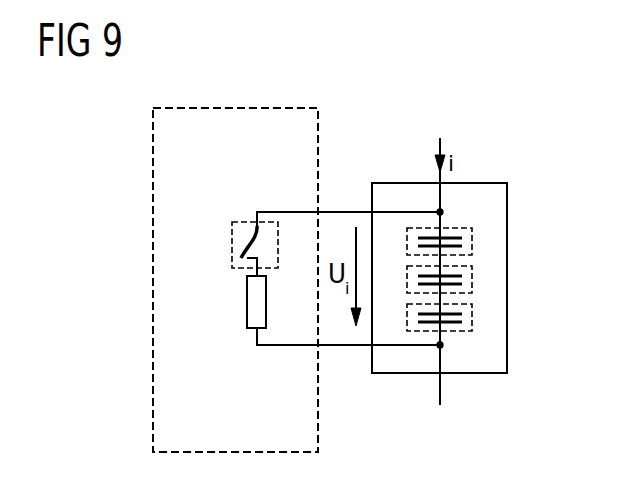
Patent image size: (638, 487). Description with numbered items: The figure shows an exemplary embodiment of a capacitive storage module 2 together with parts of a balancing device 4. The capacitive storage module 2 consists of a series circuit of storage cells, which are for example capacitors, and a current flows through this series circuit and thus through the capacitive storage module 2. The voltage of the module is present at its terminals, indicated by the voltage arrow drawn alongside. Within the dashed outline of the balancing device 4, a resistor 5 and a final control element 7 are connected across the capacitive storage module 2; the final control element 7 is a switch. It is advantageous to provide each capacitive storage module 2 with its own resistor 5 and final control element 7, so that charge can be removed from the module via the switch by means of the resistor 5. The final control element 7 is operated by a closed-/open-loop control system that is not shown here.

The capacitive storage module 2 is at (492, 183).
The balancing device 4 is at (153, 258).
The resistor 5 is at (247, 306).
The final control element 7 is at (241, 221).